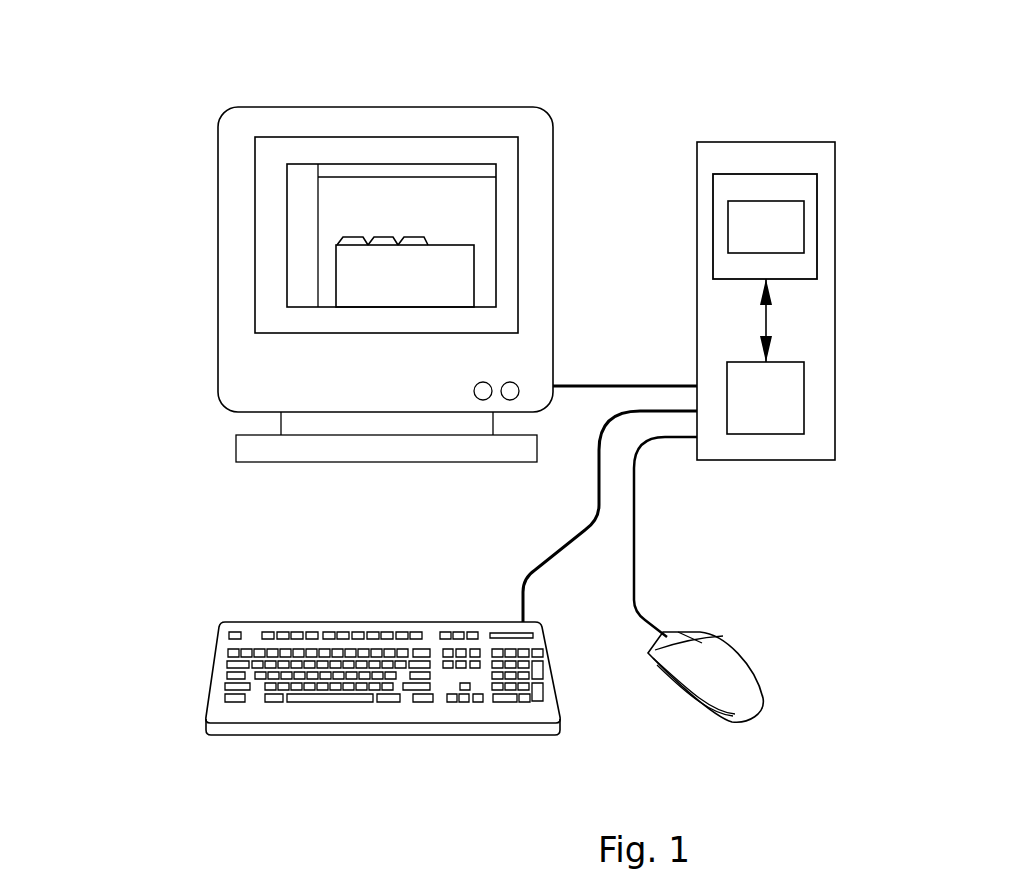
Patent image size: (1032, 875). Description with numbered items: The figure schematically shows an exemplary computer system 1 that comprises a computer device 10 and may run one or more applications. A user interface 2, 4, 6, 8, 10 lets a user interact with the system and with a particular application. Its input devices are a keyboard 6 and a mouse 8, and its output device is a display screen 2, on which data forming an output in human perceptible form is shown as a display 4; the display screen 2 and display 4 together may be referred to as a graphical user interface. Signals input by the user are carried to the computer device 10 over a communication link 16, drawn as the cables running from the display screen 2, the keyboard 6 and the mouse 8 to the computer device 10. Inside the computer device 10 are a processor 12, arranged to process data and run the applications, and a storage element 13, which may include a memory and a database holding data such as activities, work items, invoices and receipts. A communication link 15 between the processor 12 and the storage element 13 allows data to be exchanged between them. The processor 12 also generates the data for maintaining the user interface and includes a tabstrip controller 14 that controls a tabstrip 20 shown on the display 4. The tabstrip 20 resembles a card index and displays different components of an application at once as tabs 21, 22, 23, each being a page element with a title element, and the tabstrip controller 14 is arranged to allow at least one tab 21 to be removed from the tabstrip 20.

The computer system 1 is at (150, 154).
The display screen 2 is at (273, 107).
The display 4 is at (365, 164).
The keyboard 6 is at (253, 622).
The mouse 8 is at (737, 643).
The computer device 10 is at (835, 447).
The processor 12 is at (817, 191).
The storage element 13 is at (804, 383).
The tabstrip controller 14 is at (804, 238).
The communication link 15 is at (766, 320).
The communication link 16 is at (624, 385).
The tabstrip 20 is at (367, 266).
The tab 21 is at (352, 241).
The tab 22 is at (383, 241).
The tab 23 is at (413, 241).